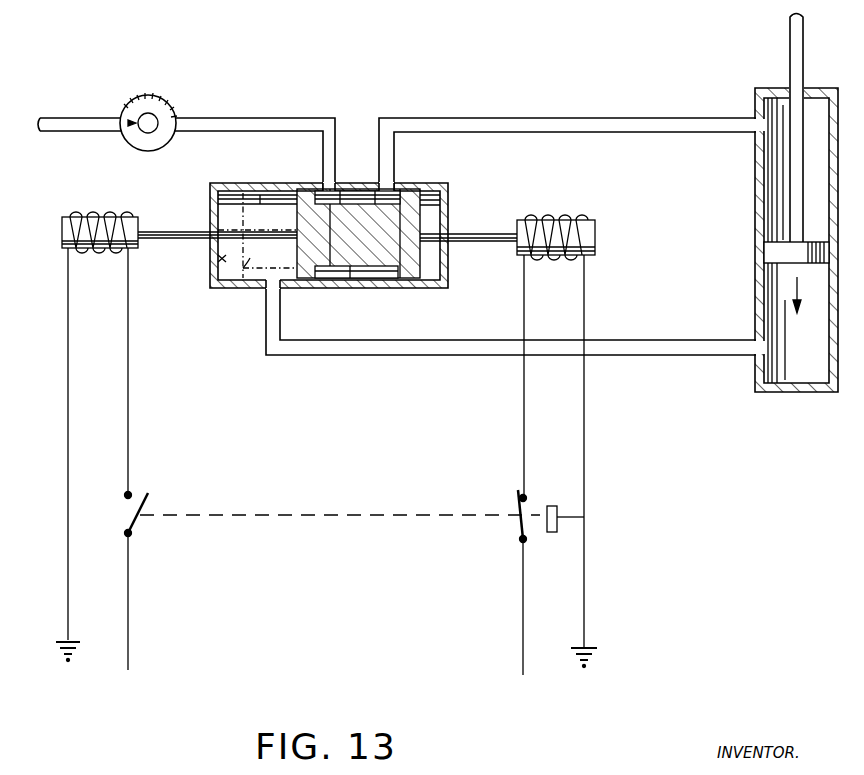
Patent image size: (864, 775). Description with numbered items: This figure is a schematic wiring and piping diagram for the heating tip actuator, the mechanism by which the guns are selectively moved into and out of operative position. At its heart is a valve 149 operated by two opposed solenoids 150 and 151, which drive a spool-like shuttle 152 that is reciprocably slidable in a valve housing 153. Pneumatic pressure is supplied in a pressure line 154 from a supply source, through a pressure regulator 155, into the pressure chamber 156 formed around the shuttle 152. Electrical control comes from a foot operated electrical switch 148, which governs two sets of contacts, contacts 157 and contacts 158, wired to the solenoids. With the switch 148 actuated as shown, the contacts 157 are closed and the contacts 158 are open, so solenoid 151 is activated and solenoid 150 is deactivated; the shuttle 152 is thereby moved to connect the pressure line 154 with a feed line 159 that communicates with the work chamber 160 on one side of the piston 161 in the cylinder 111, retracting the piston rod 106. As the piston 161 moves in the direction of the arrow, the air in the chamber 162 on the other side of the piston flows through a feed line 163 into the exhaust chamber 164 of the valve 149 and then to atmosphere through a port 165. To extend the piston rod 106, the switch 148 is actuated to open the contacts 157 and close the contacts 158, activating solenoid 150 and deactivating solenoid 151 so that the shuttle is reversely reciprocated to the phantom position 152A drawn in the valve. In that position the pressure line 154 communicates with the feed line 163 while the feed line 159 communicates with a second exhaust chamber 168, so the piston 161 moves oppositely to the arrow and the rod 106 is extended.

The piston rod 106 is at (790, 46).
The cylinder 111 is at (756, 304).
The foot operated electrical switch 148 is at (584, 517).
The valve 149 is at (252, 291).
The solenoid 150 is at (140, 214).
The solenoid 151 is at (590, 220).
The spool-like shuttle 152 is at (410, 270).
The phantom position of shuttle 152A is at (238, 268).
The valve housing 153 is at (322, 284).
The pressure line 154 is at (110, 116).
The pressure regulator 155 is at (170, 108).
The pressure chamber 156 is at (328, 192).
The contacts 157 is at (514, 498).
The contacts 158 is at (140, 493).
The feed line 159 is at (522, 118).
The work chamber 160 is at (776, 172).
The piston 161 is at (770, 251).
The chamber 162 is at (795, 372).
The feed line 163 is at (624, 346).
The exhaust chamber 164 is at (218, 259).
The port 165 is at (212, 200).
The exhaust chamber 168 is at (430, 196).